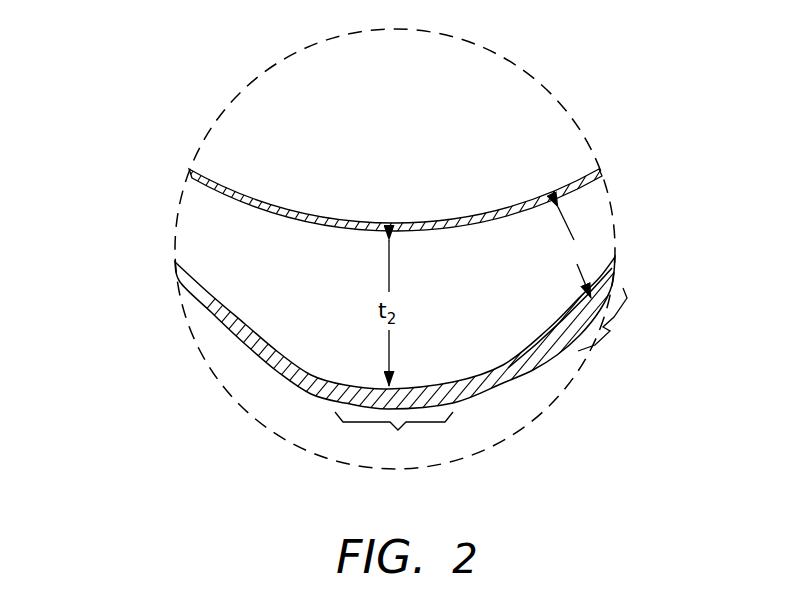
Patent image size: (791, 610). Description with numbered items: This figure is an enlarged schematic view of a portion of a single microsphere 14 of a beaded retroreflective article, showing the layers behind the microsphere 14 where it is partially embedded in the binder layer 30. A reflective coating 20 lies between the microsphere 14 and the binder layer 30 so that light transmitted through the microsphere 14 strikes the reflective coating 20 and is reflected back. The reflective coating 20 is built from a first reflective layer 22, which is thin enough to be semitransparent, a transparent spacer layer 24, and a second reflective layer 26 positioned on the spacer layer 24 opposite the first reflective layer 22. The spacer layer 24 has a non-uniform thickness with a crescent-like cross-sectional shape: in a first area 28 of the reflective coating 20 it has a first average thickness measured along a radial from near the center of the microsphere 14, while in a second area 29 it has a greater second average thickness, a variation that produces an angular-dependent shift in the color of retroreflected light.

The microsphere 14 is at (505, 82).
The reflective coating 20 is at (160, 197).
The first reflective layer 22 is at (577, 172).
The transparent spacer layer 24 is at (598, 220).
The second reflective layer 26 is at (533, 372).
The first area 28 is at (613, 320).
The second area 29 is at (394, 437).
The binder layer 30 is at (477, 435).